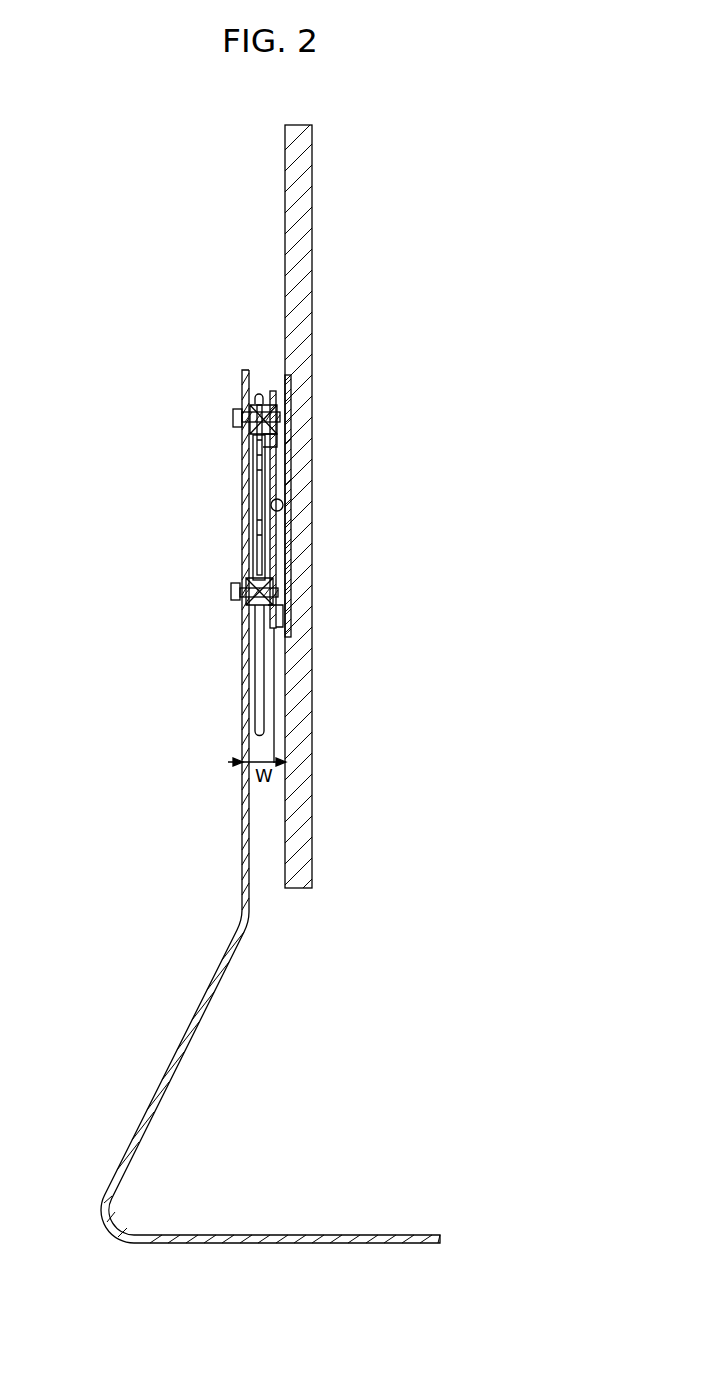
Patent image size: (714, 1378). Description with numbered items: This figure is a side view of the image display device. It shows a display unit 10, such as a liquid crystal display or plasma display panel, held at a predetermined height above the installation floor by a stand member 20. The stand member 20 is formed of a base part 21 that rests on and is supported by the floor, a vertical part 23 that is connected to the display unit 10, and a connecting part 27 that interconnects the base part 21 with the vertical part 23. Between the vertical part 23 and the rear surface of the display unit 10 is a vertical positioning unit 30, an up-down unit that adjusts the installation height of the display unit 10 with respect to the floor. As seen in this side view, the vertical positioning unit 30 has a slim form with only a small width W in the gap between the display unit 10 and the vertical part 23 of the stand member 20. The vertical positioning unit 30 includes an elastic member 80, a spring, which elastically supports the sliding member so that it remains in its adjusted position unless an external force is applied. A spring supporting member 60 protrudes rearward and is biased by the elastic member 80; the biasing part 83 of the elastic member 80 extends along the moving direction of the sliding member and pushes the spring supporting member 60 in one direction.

The display unit 10 is at (311, 230).
The stand member 20 is at (250, 841).
The base part 21 is at (292, 1243).
The vertical part 23 is at (242, 855).
The connecting part 27 is at (192, 1044).
The vertical positioning unit 30 is at (264, 369).
The spring supporting member 60 is at (253, 508).
The elastic member 80 is at (249, 551).
The biasing part 83 is at (258, 683).